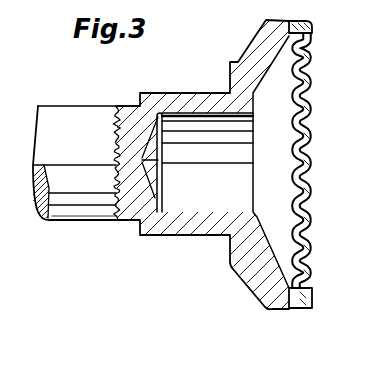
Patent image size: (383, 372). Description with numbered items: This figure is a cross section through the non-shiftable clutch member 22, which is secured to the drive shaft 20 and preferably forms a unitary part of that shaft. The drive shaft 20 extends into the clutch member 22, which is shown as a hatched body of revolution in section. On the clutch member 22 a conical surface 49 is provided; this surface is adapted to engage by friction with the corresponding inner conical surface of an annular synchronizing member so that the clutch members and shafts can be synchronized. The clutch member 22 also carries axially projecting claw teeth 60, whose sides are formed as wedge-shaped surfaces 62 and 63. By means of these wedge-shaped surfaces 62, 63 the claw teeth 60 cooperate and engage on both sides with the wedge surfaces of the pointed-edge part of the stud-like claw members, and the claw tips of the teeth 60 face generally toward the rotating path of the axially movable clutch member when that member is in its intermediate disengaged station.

The drive shaft 20 is at (82, 210).
The clutch member 22 is at (262, 285).
The conical surface 49 is at (273, 312).
The claw teeth 60 is at (300, 307).
The wedge-shaped surface 62 is at (311, 192).
The wedge-shaped surface 63 is at (310, 186).